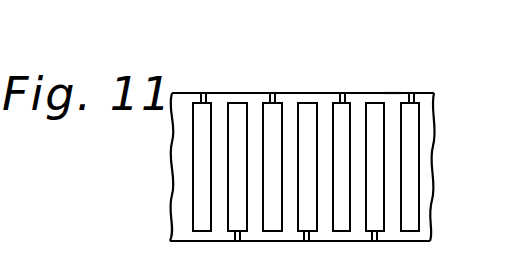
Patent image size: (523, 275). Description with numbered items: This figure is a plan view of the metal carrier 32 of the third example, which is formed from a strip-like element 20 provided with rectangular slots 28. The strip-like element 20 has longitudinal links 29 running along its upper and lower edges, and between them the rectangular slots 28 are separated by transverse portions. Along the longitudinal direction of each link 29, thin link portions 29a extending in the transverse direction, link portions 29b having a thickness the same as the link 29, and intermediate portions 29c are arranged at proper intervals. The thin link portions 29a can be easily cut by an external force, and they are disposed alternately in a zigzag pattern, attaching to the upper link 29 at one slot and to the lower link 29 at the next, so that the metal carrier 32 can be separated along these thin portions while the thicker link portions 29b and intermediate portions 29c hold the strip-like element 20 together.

The strip-like element 20 is at (323, 239).
The rectangular slot 28 is at (412, 165).
The link 29 is at (426, 99).
The thin link portion 29a is at (413, 92).
The link portion 29b is at (370, 98).
The intermediate portion 29c is at (394, 99).
The metal carrier 32 is at (160, 197).